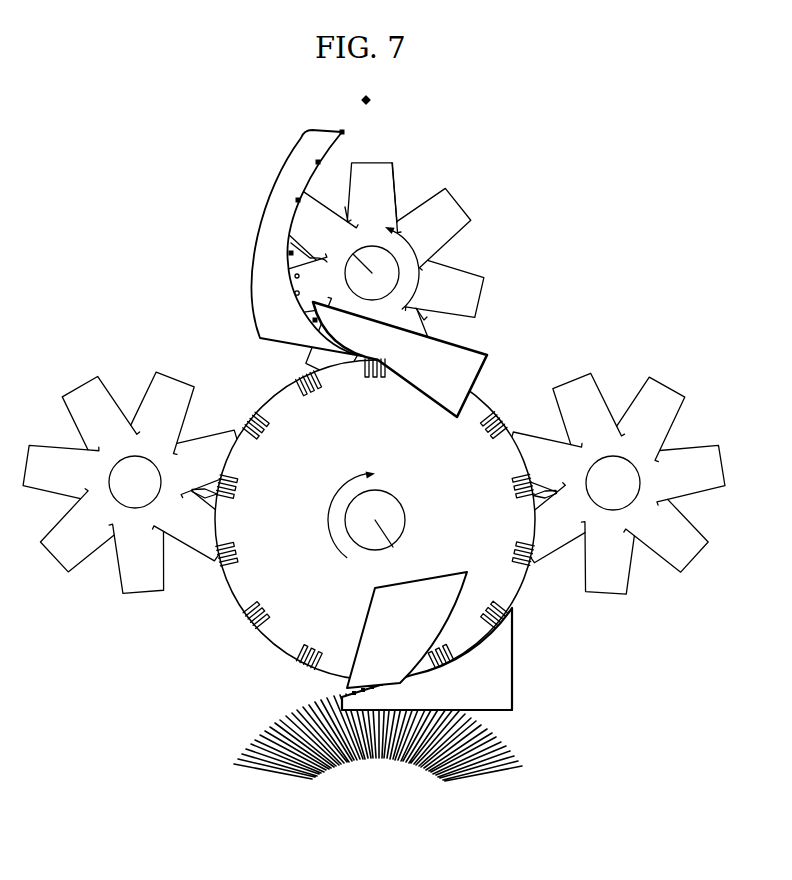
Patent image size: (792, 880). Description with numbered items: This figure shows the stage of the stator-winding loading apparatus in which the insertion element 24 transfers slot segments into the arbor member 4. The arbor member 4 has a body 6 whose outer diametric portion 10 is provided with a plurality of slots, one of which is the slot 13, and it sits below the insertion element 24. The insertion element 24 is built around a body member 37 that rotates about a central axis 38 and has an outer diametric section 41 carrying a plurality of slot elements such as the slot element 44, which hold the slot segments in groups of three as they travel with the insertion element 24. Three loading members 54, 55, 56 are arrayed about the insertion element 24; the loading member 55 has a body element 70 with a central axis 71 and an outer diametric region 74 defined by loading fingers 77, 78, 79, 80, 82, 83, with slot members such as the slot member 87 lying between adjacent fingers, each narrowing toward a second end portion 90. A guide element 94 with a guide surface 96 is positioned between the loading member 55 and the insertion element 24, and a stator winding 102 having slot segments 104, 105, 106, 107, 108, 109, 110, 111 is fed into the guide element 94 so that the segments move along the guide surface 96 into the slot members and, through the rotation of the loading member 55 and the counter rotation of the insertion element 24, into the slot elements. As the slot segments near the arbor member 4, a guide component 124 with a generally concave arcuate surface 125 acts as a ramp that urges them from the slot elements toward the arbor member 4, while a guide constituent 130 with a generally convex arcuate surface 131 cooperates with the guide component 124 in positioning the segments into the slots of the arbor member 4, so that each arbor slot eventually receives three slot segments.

The arbor member 4 is at (548, 747).
The body 6 is at (273, 706).
The outer diametric portion 10 is at (258, 737).
The slot 13 is at (238, 772).
The insertion element 24 is at (379, 419).
The body member 37 is at (255, 408).
The central axis 38 is at (393, 547).
The outer diametric section 41 is at (232, 600).
The slot element 44 is at (286, 441).
The loading member 54 is at (50, 352).
The loading member 55 is at (426, 115).
The loading member 56 is at (707, 569).
The body element 70 is at (383, 185).
The central axis 71 is at (356, 254).
The outer diametric region 74 is at (378, 158).
The loading finger 77 is at (316, 207).
The loading finger 78 is at (396, 185).
The loading finger 79 is at (450, 225).
The loading finger 80 is at (470, 284).
The loading finger 82 is at (308, 360).
The loading finger 83 is at (294, 275).
The slot member 87 is at (425, 314).
The second end portion 90 is at (329, 266).
The guide element 94 is at (252, 212).
The guide surface 96 is at (294, 299).
The stator winding 102 is at (345, 105).
The slot segment 104 is at (376, 682).
The slot segment 105 is at (443, 667).
The slot segment 106 is at (493, 604).
The slot segment 107 is at (510, 547).
The slot segment 108 is at (510, 490).
The slot segment 109 is at (491, 421).
The slot segment 110 is at (388, 357).
The slot segment 111 is at (315, 320).
The guide component 124 is at (343, 590).
The arcuate surface 125 is at (412, 672).
The guide constituent 130 is at (533, 642).
The arcuate surface 131 is at (460, 658).